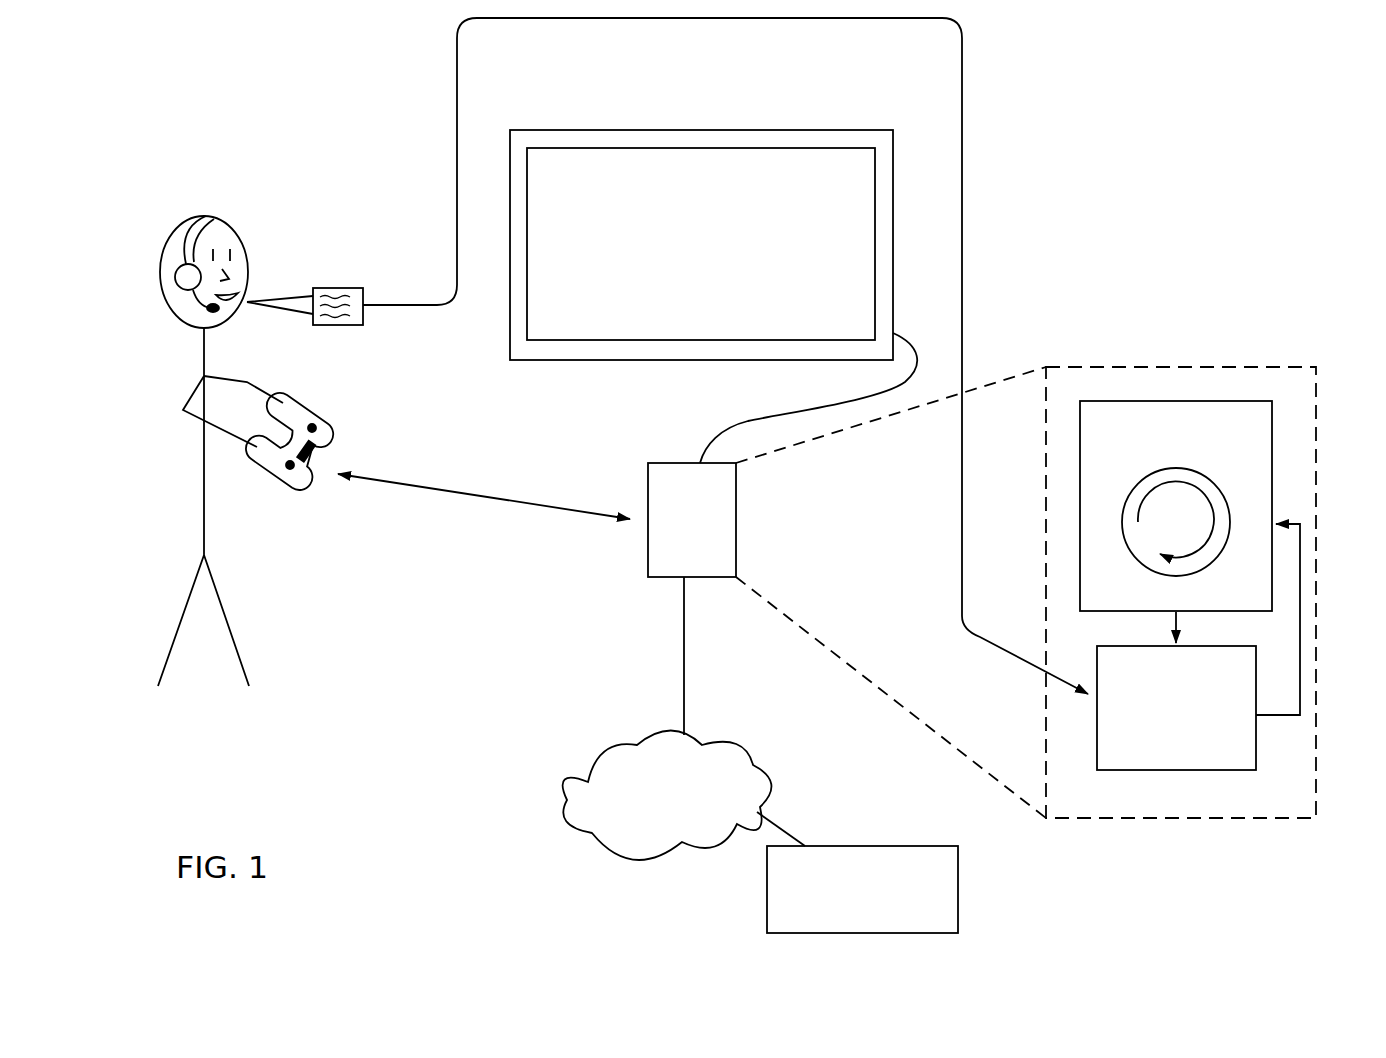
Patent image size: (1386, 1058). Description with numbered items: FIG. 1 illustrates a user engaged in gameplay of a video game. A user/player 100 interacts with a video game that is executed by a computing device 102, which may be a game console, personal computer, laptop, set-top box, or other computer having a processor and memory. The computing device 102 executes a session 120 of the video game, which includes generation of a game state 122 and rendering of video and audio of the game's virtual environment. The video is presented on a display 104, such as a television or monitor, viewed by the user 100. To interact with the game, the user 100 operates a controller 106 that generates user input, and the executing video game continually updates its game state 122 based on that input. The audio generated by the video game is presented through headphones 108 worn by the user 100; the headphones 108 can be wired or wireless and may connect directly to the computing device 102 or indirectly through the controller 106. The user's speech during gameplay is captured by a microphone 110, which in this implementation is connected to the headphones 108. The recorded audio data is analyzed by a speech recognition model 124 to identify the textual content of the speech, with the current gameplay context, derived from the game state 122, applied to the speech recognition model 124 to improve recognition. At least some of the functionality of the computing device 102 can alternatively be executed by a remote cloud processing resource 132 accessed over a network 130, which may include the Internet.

The user/player 100 is at (249, 255).
The computing device 102 is at (737, 518).
The display 104 is at (733, 129).
The controller 106 is at (328, 441).
The headphones 108 is at (174, 309).
The microphone 110 is at (216, 311).
The session 120 is at (1271, 401).
The game state 122 is at (1228, 510).
The speech recognition model 124 is at (1250, 646).
The network 130 is at (566, 800).
The cloud processing resource 132 is at (959, 882).